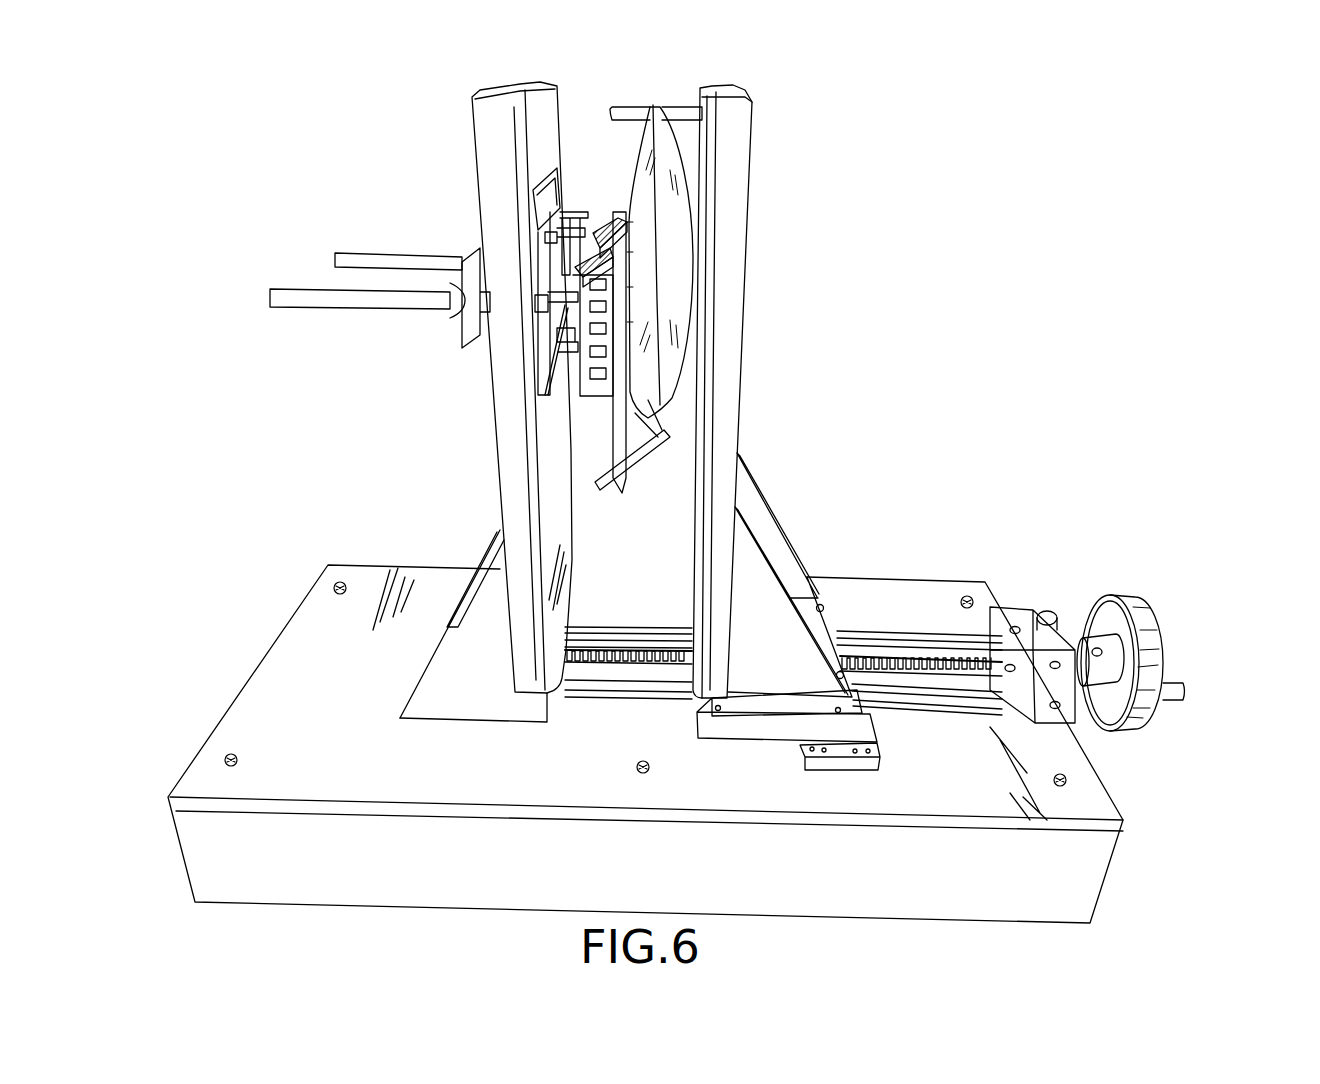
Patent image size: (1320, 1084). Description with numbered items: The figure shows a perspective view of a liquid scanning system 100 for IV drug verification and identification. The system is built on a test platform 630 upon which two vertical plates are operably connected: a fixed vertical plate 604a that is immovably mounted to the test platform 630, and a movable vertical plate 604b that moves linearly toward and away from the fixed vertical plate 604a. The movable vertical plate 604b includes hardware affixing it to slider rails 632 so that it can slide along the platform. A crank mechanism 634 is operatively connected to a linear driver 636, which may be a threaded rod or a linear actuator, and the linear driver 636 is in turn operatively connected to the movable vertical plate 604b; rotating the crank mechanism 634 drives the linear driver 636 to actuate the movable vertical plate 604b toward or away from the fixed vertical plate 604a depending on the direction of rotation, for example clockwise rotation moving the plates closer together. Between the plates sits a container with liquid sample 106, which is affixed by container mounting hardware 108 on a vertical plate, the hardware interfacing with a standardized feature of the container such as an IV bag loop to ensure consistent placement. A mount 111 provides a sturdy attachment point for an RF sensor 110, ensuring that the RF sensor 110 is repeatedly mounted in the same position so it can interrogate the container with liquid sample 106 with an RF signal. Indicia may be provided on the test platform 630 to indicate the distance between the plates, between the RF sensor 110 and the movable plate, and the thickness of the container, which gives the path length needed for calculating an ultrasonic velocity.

The liquid scanning system 100 is at (960, 138).
The container with liquid sample 106 is at (667, 335).
The container mounting hardware 108 is at (640, 112).
The RF sensor 110 is at (620, 348).
The mount 111 is at (545, 330).
The fixed vertical plate 604a is at (488, 174).
The movable vertical plate 604b is at (756, 160).
The test platform 630 is at (290, 665).
The slider rails 632 is at (942, 697).
The crank mechanism 634 is at (1148, 655).
The linear driver 636 is at (848, 650).